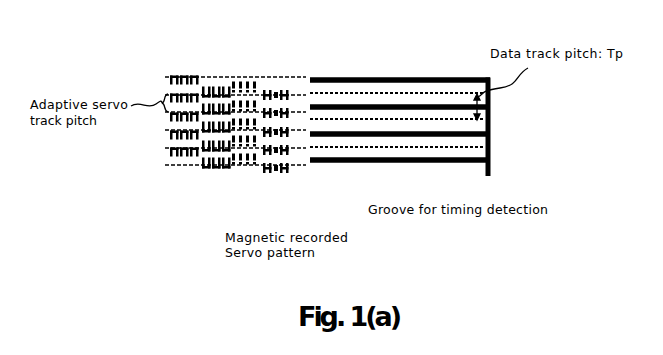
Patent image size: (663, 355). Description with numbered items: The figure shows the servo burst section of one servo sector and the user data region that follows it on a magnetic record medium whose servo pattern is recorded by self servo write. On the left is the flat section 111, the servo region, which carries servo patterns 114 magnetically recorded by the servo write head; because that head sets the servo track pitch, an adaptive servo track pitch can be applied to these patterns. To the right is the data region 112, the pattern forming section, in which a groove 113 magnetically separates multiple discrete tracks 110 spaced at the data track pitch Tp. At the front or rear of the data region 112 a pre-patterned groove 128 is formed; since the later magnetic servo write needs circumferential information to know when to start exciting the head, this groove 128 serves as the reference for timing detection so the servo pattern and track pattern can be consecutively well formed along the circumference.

The track 110 is at (434, 91).
The flat section 111 is at (228, 75).
The data region 112 is at (407, 77).
The groove 113 is at (331, 80).
The servo pattern 114 is at (268, 172).
The pre-patterned groove 128 is at (488, 174).